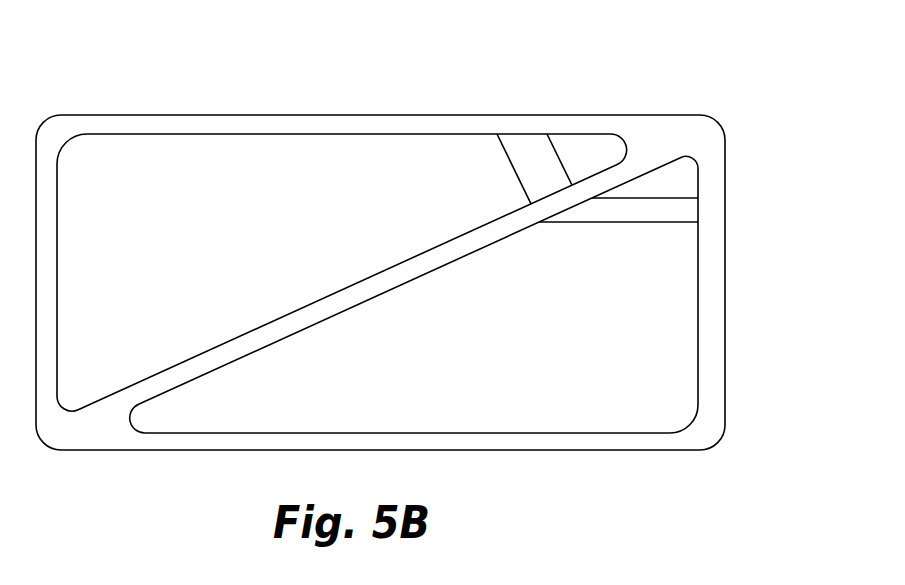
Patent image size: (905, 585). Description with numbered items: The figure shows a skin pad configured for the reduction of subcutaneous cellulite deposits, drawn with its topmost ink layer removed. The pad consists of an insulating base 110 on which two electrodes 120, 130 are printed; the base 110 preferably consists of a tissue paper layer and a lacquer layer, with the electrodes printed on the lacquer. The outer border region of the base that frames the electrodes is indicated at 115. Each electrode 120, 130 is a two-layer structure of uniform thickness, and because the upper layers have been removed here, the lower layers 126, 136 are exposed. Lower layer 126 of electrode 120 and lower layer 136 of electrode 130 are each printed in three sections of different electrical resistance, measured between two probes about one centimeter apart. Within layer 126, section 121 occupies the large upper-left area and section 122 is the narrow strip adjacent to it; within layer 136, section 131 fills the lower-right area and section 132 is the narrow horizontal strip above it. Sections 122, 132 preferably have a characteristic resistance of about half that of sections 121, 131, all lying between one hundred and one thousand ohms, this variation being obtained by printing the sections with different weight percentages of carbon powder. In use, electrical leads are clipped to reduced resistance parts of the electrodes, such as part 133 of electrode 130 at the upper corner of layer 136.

The insulating base 110 is at (653, 143).
The frame border 115 is at (98, 427).
The electrode 120 is at (342, 212).
The lower layer 126 is at (312, 148).
The section 121 is at (252, 238).
The section 122 is at (534, 169).
The electrode 130 is at (467, 313).
The lower layer 136 is at (602, 402).
The section 131 is at (543, 348).
The section 132 is at (618, 213).
The reduced resistance part 133 is at (677, 182).